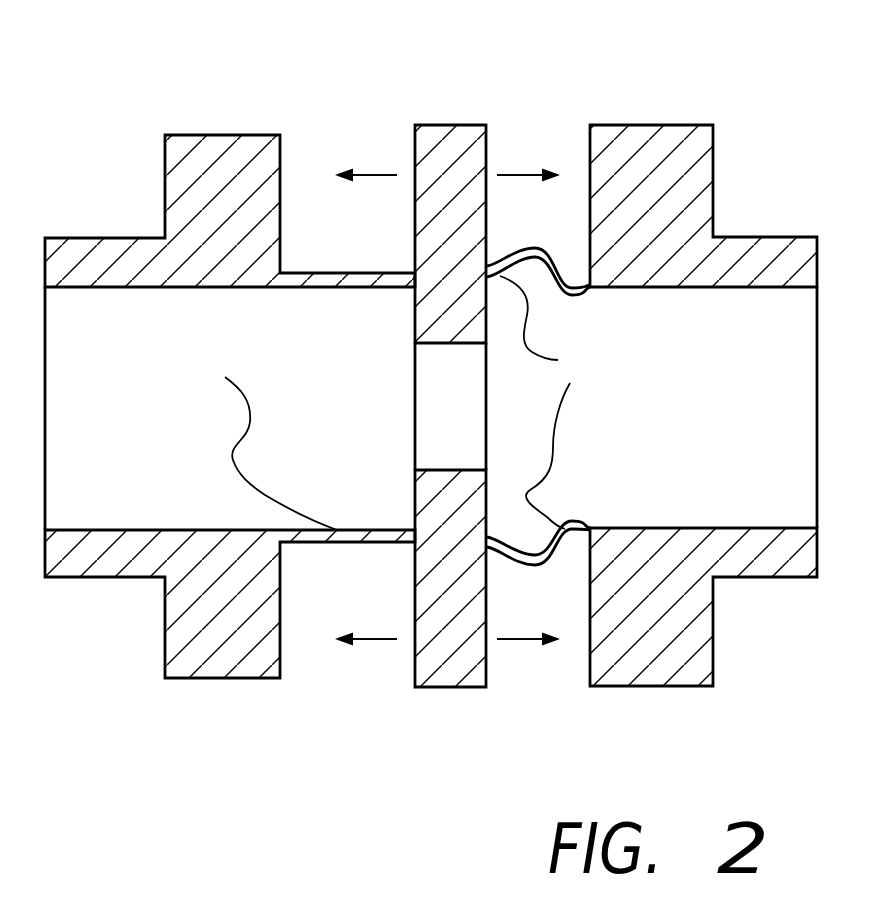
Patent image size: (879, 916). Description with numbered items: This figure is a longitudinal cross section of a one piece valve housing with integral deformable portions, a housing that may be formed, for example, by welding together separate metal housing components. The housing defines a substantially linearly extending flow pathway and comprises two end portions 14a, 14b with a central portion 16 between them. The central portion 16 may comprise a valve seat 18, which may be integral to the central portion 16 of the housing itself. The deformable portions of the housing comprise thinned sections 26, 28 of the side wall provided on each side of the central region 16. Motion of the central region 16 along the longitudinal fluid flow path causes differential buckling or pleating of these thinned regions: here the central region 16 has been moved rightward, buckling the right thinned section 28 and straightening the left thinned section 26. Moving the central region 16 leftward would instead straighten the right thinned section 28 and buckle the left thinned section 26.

The end portion 14a is at (103, 312).
The end portion 14b is at (695, 503).
The central portion 16 is at (445, 97).
The valve seat 18 is at (415, 328).
The thinned section 26 is at (353, 287).
The thinned section 28 is at (542, 406).